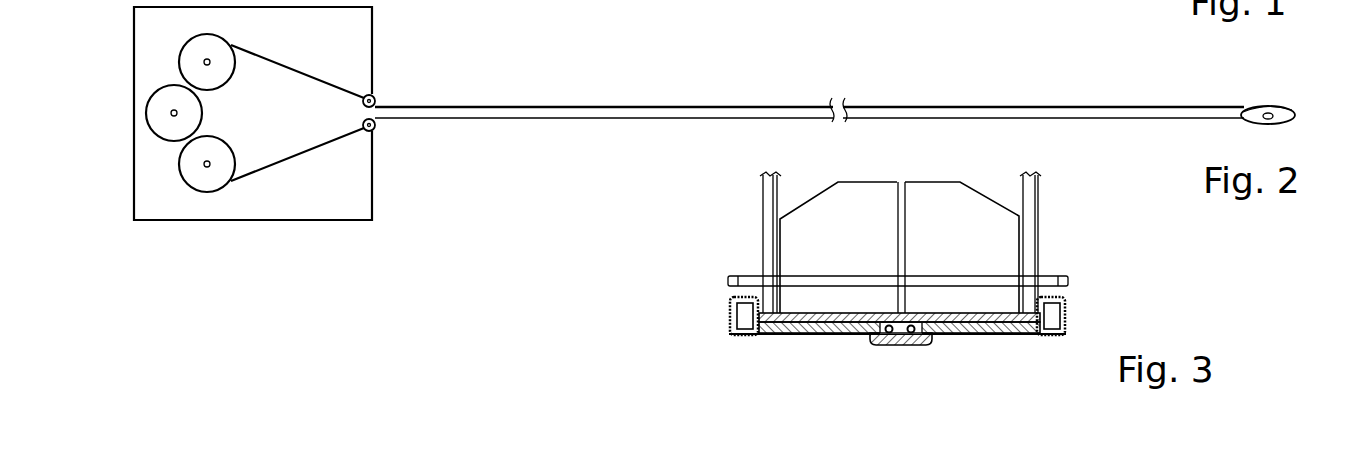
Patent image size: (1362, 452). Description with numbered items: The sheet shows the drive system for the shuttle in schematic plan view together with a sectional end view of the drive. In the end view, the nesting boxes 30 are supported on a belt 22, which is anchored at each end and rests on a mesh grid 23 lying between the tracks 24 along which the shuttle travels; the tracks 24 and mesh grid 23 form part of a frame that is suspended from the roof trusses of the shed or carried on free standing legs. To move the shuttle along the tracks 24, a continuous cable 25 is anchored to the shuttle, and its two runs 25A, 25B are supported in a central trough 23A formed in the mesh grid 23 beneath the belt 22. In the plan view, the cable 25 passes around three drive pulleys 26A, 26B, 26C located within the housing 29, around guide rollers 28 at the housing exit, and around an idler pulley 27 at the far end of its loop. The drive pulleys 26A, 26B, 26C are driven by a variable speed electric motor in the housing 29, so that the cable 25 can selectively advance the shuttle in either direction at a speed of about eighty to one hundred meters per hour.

In FIG. 3, the belt 22 is at (982, 308).
In FIG. 3, the mesh grid 23 is at (798, 338).
In FIG. 3, the central trough 23A is at (901, 347).
In FIG. 3, the tracks 24 is at (726, 311).
In FIG. 2, the continuous cable 25 is at (868, 106).
In FIG. 2, the cable run 25A is at (731, 106).
In FIG. 3, the cable run 25A is at (884, 336).
In FIG. 2, the cable run 25B is at (653, 120).
In FIG. 3, the cable run 25B is at (918, 338).
In FIG. 2, the drive pulley 26A is at (190, 62).
In FIG. 2, the drive pulley 26B is at (160, 113).
In FIG. 2, the drive pulley 26C is at (190, 165).
In FIG. 2, the idler pulley 27 is at (1290, 106).
In FIG. 2, the guide rollers 28 is at (376, 128).
In FIG. 2, the housing 29 is at (378, 33).
In FIG. 3, the nesting boxes 30 is at (882, 175).